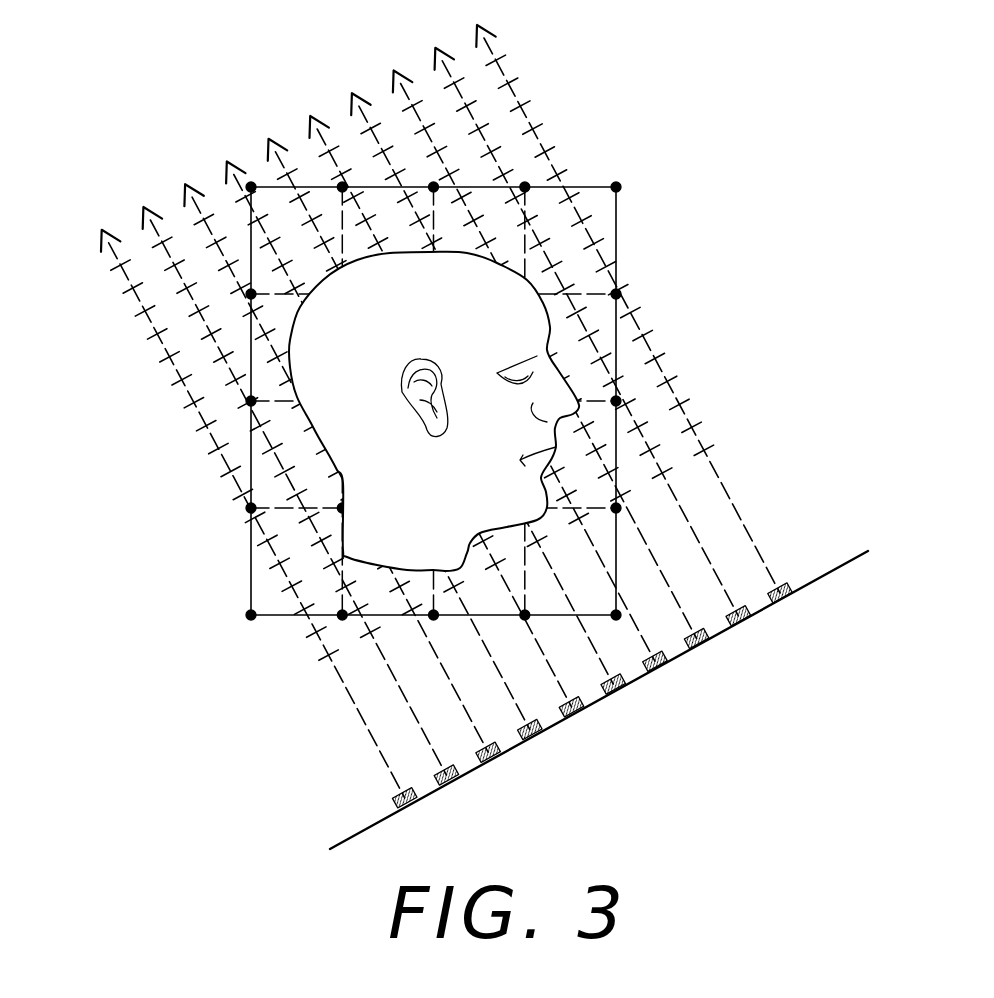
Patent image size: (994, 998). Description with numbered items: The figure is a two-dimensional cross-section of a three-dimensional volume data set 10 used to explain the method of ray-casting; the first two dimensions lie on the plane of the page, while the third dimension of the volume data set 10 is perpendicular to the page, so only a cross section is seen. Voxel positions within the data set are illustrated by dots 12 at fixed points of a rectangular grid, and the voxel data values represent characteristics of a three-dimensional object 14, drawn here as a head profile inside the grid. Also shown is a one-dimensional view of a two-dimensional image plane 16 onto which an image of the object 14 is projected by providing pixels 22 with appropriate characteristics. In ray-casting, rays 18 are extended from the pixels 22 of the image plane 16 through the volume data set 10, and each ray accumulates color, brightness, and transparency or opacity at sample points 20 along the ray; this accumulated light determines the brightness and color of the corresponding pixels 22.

The volume data set 10 is at (617, 186).
The dots 12 is at (250, 510).
The three-dimensional object 14 is at (418, 308).
The image plane 16 is at (850, 560).
The rays 18 is at (735, 506).
The sample points 20 is at (543, 123).
The pixels 22 is at (703, 647).